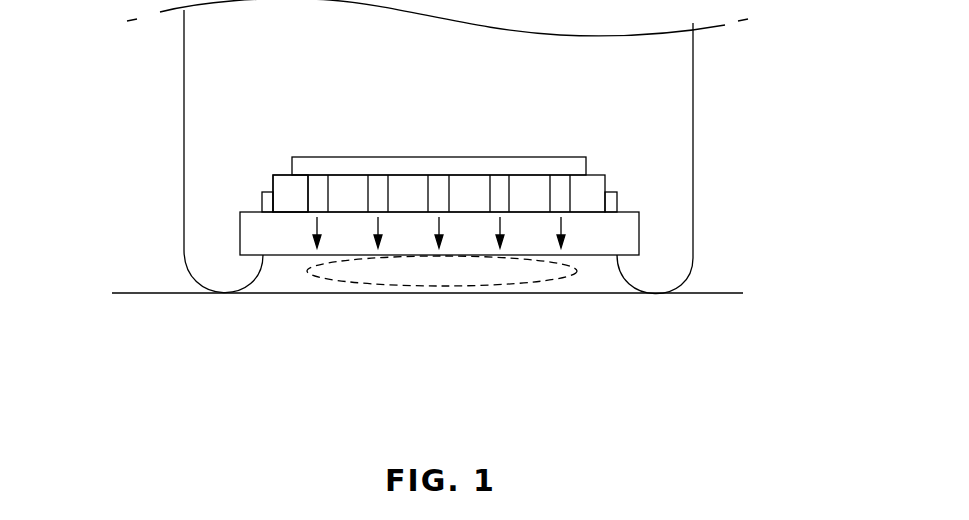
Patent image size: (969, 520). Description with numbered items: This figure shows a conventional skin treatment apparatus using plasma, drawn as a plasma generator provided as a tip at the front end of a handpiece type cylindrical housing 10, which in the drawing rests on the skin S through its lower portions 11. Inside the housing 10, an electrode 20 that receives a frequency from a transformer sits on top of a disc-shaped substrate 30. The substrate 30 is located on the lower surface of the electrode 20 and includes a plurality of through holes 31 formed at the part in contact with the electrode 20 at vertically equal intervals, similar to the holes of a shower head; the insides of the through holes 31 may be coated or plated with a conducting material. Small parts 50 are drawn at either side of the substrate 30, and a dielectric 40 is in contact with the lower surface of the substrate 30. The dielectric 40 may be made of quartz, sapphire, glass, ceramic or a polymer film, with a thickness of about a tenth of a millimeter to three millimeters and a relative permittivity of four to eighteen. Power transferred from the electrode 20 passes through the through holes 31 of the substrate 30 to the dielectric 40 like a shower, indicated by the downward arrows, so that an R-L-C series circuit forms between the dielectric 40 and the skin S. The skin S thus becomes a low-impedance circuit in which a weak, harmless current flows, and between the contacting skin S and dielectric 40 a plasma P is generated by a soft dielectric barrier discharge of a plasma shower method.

The cylindrical housing 10 is at (683, 60).
The leg 11 is at (203, 282).
The electrode 20 is at (443, 168).
The substrate 30 is at (590, 183).
The through holes 31 is at (314, 191).
The dielectric 40 is at (639, 232).
The spacer 50 is at (269, 203).
The plasma P is at (450, 283).
The skin S is at (592, 293).